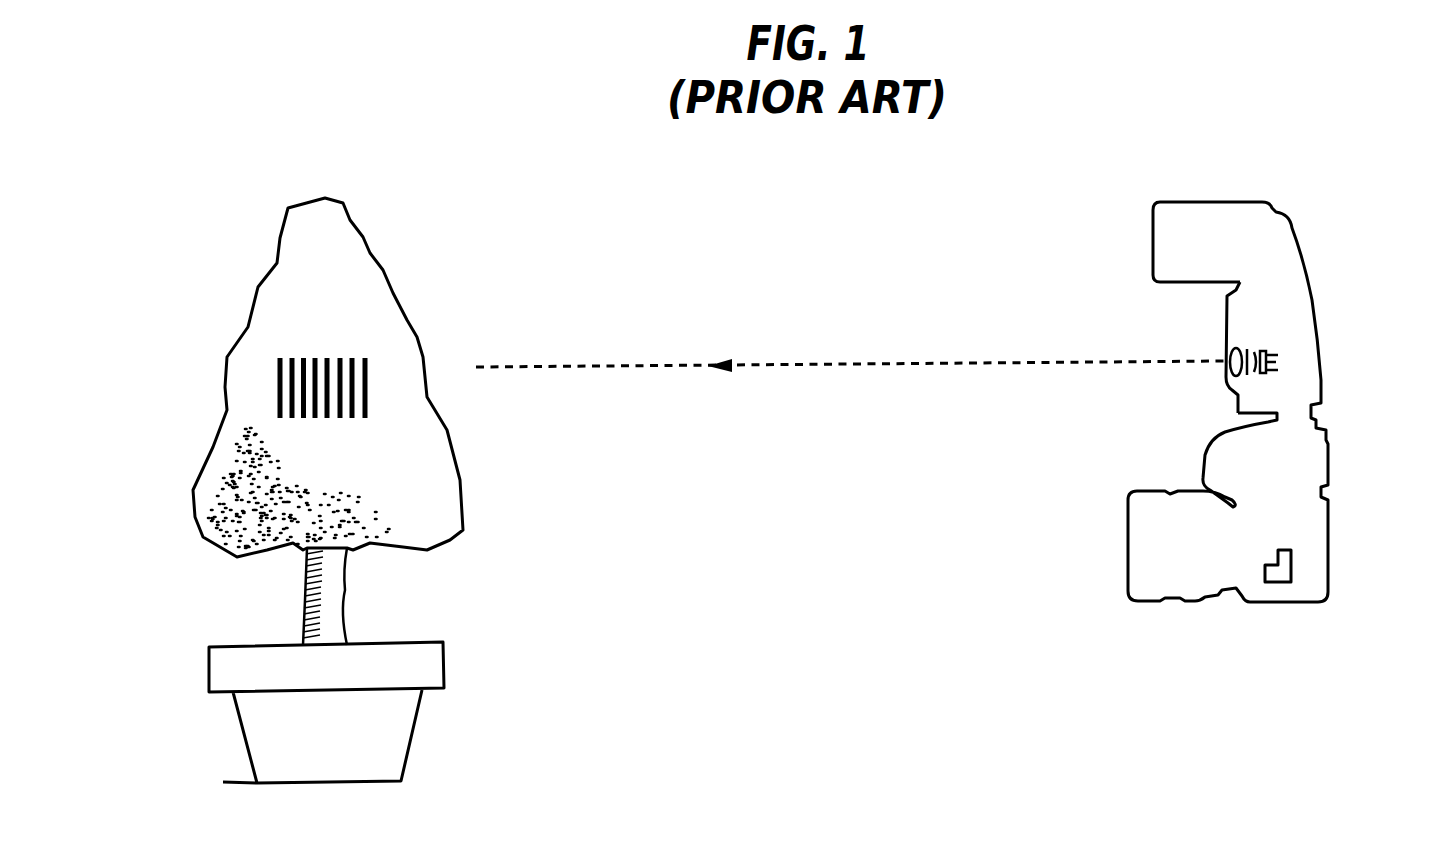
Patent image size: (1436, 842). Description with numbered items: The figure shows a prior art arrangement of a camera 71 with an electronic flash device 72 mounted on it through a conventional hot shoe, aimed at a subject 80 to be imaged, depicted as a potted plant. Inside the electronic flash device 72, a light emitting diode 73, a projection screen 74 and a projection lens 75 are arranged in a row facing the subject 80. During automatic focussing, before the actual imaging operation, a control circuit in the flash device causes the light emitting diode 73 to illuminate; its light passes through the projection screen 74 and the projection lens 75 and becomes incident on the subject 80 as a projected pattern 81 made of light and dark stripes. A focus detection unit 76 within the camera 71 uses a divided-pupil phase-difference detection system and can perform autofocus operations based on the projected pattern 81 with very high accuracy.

The camera 71 is at (1173, 601).
The electronic flash device 72 is at (1225, 201).
The light emitting diode 73 is at (1278, 373).
The projection screen 74 is at (1248, 323).
The projection lens 75 is at (1224, 362).
The focus detection unit 76 is at (1297, 563).
The subject 80 is at (322, 213).
The projected pattern 81 is at (330, 343).